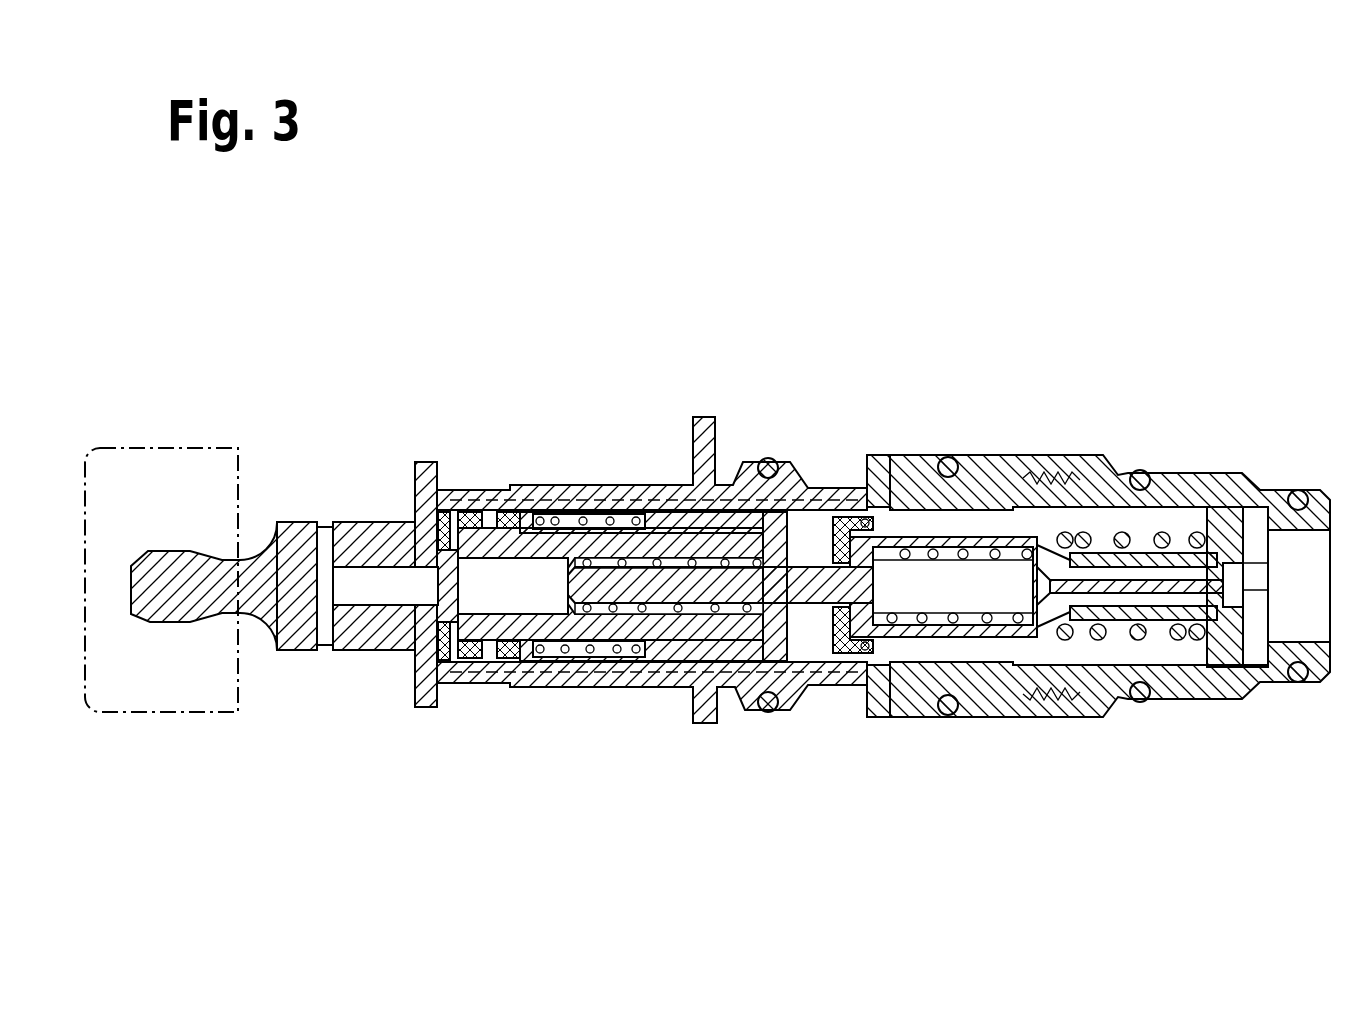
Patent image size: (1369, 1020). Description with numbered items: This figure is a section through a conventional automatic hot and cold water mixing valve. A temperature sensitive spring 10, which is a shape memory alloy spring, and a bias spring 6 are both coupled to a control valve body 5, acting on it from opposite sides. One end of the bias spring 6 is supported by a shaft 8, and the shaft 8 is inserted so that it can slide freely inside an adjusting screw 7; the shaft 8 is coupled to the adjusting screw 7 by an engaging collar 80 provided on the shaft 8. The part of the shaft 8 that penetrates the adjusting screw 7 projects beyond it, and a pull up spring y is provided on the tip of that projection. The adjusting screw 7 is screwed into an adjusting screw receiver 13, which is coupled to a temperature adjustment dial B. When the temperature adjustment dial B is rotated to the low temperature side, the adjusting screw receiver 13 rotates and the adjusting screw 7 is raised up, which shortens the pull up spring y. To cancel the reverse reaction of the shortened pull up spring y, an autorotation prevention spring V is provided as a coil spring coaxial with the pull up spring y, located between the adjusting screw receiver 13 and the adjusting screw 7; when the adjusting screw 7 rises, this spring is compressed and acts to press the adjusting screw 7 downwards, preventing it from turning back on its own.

The temperature adjustment dial B is at (128, 447).
The pull up spring y is at (575, 520).
The autorotation prevention spring V is at (610, 520).
The shaft 8 is at (688, 558).
The bias spring 6 is at (882, 505).
The control valve body 5 is at (932, 478).
The adjusting screw receiver 13 is at (545, 623).
The adjusting screw 7 is at (747, 643).
The engaging collar 80 is at (803, 640).
The temperature sensitive spring 10 is at (1180, 640).